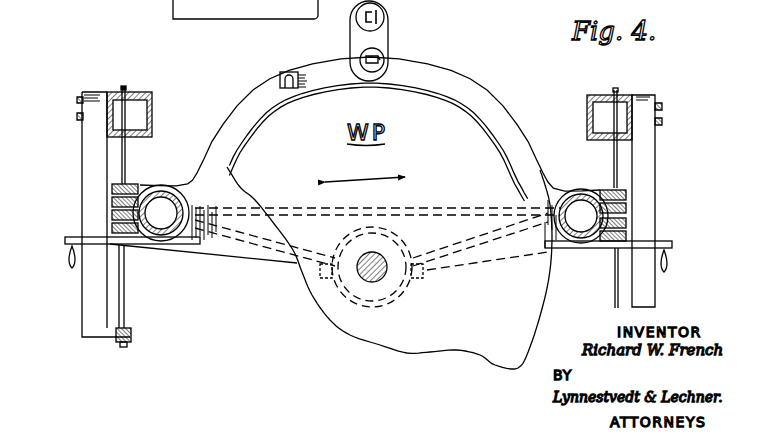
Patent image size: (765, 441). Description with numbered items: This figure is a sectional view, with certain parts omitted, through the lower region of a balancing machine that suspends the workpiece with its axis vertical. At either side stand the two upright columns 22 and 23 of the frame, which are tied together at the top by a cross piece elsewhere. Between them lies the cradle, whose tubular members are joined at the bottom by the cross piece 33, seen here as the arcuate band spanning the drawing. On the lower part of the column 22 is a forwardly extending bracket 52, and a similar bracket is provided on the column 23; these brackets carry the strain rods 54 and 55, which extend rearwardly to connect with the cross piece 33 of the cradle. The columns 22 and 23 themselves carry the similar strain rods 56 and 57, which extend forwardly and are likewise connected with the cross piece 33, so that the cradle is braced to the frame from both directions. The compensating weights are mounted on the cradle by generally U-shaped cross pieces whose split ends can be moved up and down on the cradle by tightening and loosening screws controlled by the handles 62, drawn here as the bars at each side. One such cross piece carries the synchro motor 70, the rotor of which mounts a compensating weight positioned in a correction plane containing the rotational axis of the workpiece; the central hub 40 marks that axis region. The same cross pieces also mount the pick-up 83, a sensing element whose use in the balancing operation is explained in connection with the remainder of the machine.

The upright column 22 is at (147, 105).
The upright column 23 is at (598, 93).
The cross piece 33 is at (200, 160).
The pivot hub 40 is at (372, 280).
The bracket 52 is at (87, 297).
The strain rod 54 is at (127, 306).
The strain rod 55 is at (617, 287).
The strain rod 56 is at (125, 176).
The strain rod 57 is at (613, 168).
The handle 62 is at (75, 237).
The synchro motor 70 is at (355, 58).
The pick-up 83 is at (280, 78).